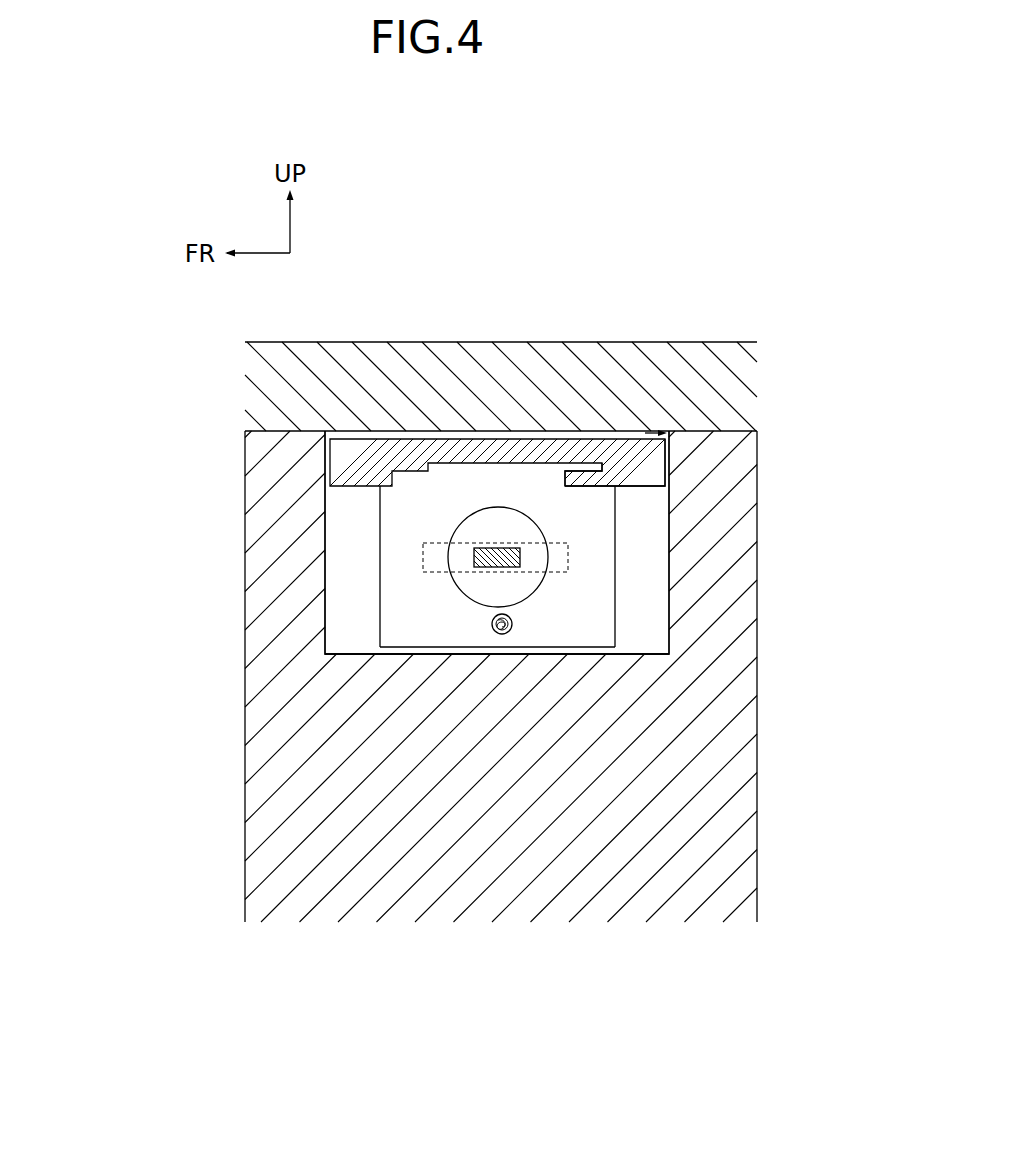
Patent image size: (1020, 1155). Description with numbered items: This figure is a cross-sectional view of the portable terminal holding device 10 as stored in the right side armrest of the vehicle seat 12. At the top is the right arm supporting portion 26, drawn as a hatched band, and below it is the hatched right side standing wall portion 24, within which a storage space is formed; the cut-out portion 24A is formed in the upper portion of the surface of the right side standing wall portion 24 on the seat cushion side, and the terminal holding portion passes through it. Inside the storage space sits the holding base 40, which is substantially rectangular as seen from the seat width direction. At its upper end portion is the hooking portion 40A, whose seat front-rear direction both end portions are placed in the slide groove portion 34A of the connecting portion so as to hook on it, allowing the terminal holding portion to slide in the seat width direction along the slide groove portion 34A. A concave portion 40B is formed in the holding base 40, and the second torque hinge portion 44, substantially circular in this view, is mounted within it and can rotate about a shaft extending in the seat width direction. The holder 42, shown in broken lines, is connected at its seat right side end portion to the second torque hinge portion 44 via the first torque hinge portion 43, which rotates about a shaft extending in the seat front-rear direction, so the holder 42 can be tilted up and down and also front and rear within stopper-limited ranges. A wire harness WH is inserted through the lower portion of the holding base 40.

The portable terminal holding device 10 is at (207, 481).
The vehicle seat 12 is at (158, 356).
The right side standing wall portion 24 is at (237, 723).
The cut-out portion 24A is at (340, 646).
The right arm supporting portion 26 is at (377, 342).
The slide groove portion 34A is at (583, 470).
The holding base 40 is at (370, 590).
The hooking portion 40A is at (513, 458).
The concave portion 40B is at (498, 606).
The holder 42 is at (563, 573).
The first torque hinge portion 43 is at (490, 548).
The second torque hinge portion 44 is at (542, 528).
The wire harness WH is at (502, 636).